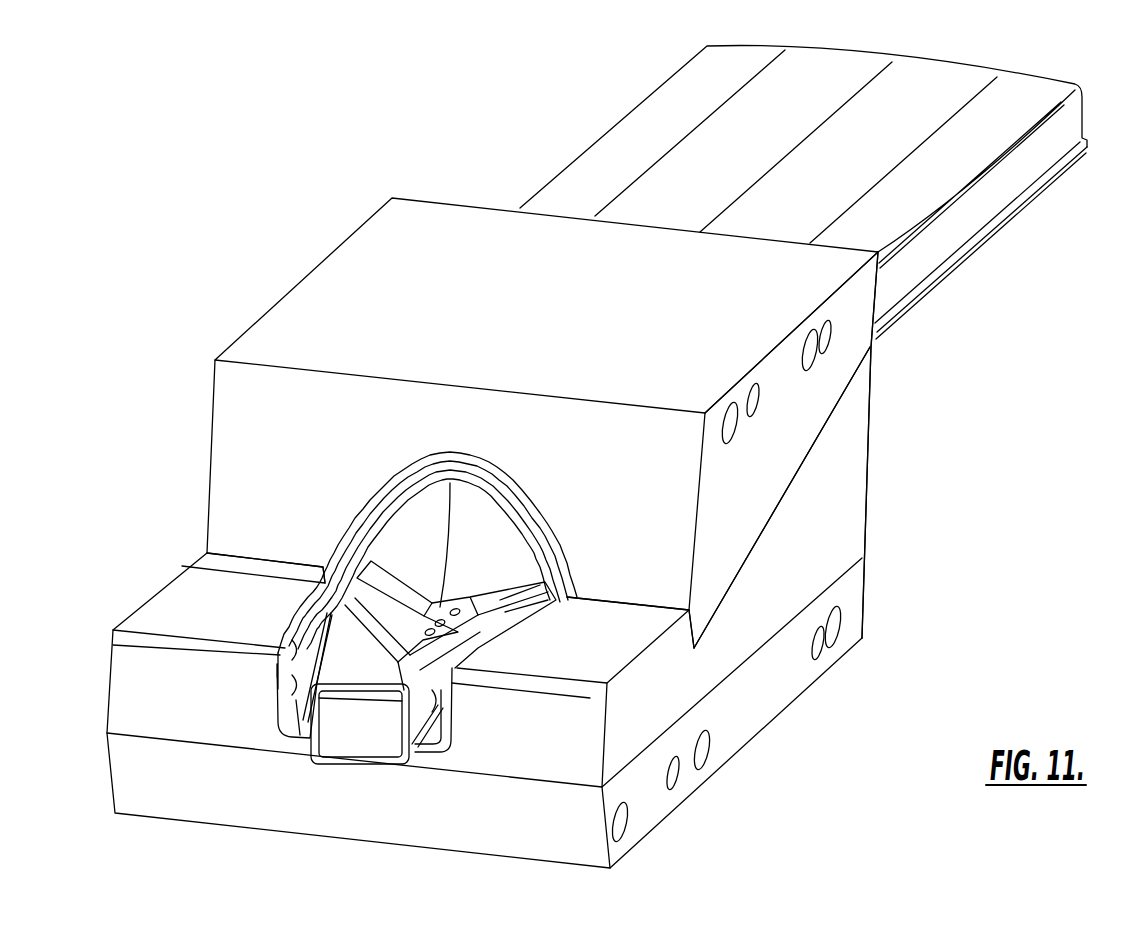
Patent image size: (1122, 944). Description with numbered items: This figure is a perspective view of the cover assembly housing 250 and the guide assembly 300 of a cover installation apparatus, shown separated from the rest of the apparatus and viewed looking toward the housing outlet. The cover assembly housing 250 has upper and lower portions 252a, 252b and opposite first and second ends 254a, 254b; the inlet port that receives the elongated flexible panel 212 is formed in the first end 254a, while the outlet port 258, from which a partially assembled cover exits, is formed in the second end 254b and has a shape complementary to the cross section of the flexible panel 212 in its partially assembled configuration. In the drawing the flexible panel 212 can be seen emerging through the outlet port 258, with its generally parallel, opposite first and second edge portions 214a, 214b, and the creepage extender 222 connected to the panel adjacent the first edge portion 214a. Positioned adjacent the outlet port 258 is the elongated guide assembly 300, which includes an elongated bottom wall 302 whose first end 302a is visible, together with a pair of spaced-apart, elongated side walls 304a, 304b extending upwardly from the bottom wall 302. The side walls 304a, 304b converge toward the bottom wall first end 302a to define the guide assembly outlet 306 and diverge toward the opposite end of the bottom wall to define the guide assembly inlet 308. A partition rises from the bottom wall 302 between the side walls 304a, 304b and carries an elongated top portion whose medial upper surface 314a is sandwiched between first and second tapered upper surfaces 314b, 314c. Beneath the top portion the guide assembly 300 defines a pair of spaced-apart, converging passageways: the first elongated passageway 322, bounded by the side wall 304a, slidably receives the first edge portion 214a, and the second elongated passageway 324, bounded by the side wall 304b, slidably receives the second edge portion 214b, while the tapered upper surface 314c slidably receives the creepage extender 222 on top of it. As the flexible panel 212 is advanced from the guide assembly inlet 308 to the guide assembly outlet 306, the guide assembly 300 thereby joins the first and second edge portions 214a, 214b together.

The elongated flexible panel 212 is at (937, 82).
The first edge portion 214a is at (567, 597).
The second edge portion 214b is at (332, 600).
The creepage extender 222 is at (516, 598).
The cover assembly housing 250 is at (345, 285).
The upper portion 252a is at (773, 450).
The lower portion 252b is at (837, 540).
The first end 254a is at (862, 413).
The second end 254b is at (672, 568).
The outlet port 258 is at (392, 482).
The guide assembly 300 is at (371, 709).
The elongated bottom wall 302 is at (312, 735).
The bottom wall first end 302a is at (402, 660).
The first elongated side wall 304a is at (433, 698).
The second elongated side wall 304b is at (297, 648).
The guide assembly outlet 306 is at (297, 690).
The guide assembly inlet 308 is at (335, 570).
The medial upper surface 314a is at (338, 733).
The first tapered upper surface 314b is at (345, 645).
The second tapered upper surface 314c is at (468, 645).
The first elongated passageway 322 is at (357, 765).
The second elongated passageway 324 is at (300, 713).